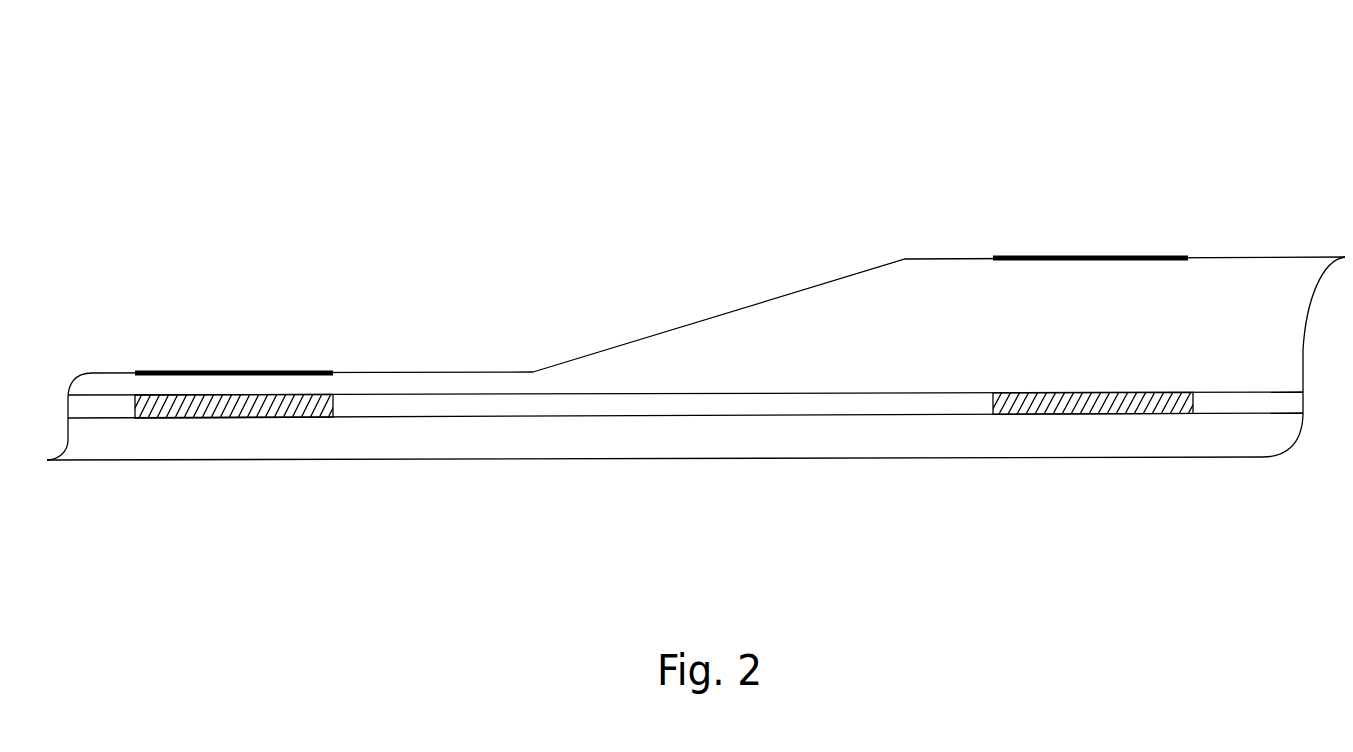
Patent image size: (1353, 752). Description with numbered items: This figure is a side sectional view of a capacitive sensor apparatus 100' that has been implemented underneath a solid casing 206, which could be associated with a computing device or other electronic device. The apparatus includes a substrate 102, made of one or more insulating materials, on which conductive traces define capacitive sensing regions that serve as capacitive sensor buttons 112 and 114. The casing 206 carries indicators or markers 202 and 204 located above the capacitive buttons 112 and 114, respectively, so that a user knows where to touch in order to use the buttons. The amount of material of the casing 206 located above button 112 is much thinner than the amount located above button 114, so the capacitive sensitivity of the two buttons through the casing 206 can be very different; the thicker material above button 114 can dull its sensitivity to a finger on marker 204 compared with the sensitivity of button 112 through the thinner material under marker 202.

The capacitive sensor apparatus 100' is at (696, 245).
The substrate 102 is at (510, 459).
The capacitive sensor button 112 is at (223, 418).
The capacitive sensor button 114 is at (1082, 413).
The marker 202 is at (267, 373).
The marker 204 is at (1102, 258).
The casing 206 is at (906, 343).